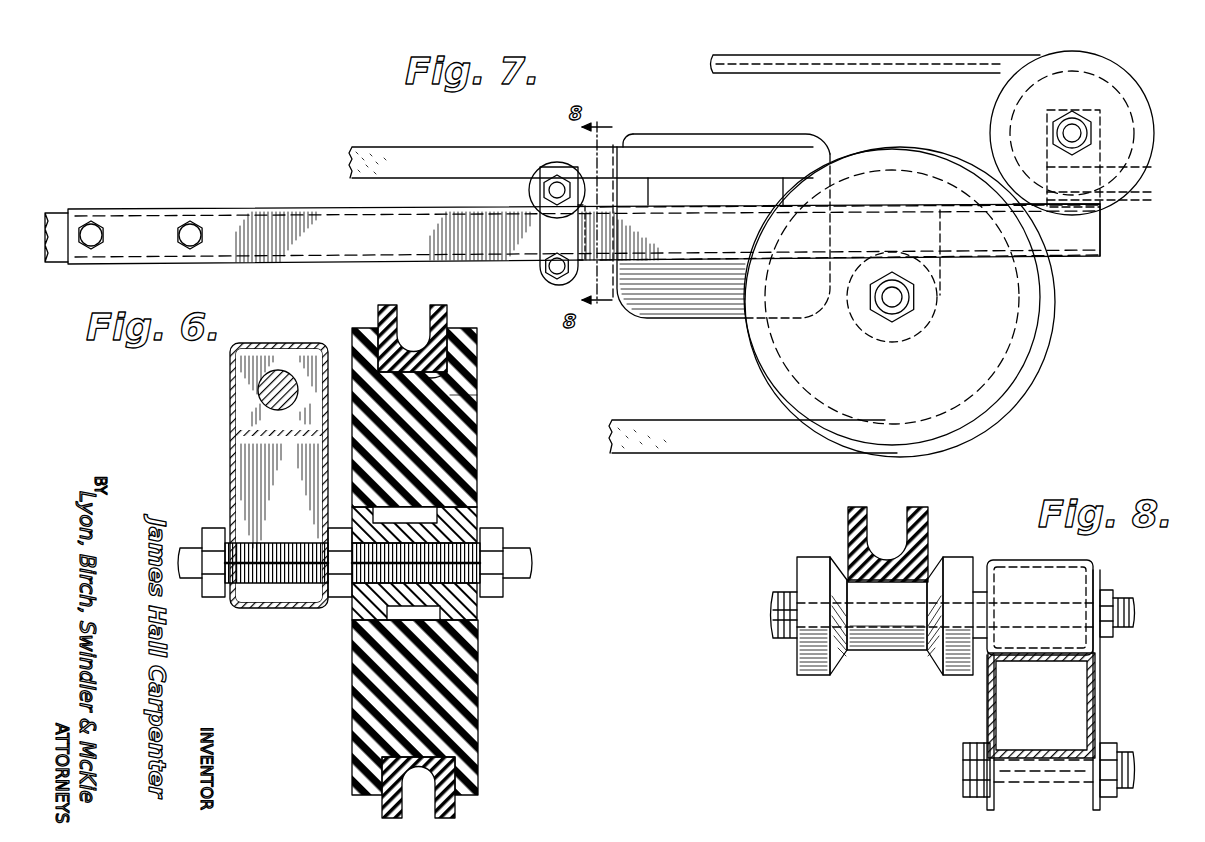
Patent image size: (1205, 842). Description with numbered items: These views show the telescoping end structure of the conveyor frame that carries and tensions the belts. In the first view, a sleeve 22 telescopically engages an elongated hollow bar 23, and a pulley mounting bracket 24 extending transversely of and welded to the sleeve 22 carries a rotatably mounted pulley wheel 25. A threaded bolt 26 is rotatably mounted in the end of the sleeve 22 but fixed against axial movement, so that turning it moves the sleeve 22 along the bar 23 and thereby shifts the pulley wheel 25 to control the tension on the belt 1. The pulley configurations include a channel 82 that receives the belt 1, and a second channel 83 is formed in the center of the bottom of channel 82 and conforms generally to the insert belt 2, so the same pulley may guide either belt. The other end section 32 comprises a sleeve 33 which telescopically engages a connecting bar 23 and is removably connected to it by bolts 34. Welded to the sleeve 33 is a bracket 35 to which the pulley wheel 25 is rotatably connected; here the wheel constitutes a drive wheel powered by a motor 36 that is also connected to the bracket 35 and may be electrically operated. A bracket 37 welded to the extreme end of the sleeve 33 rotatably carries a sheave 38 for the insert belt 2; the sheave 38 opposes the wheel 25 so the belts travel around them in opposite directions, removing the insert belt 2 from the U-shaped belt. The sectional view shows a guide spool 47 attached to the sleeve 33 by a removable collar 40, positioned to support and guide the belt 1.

In FIG. 7, the belt 1 is at (462, 150).
In FIG. 6, the belt 1 is at (445, 325).
In FIG. 8, the belt 1 is at (928, 530).
In FIG. 7, the insert belt 2 is at (815, 72).
In FIG. 6, the sleeve 22 is at (232, 395).
In FIG. 7, the elongated hollow bar 23 is at (55, 219).
In FIG. 6, the pulley mounting bracket 24 is at (240, 473).
In FIG. 7, the pulley wheel 25 is at (802, 366).
In FIG. 6, the pulley wheel 25 is at (470, 683).
In FIG. 6, the threaded bolt 26 is at (278, 380).
In FIG. 7, the other end section 32 is at (1104, 232).
In FIG. 7, the sleeve 33 is at (1078, 256).
In FIG. 8, the sleeve 33 is at (995, 712).
In FIG. 7, the bolts 34 is at (95, 224).
In FIG. 7, the bracket 35 is at (936, 292).
In FIG. 7, the motor 36 is at (634, 314).
In FIG. 7, the bracket 37 is at (1148, 164).
In FIG. 7, the sheave 38 is at (1117, 72).
In FIG. 7, the removable collar 40 is at (548, 244).
In FIG. 8, the removable collar 40 is at (1100, 676).
In FIG. 7, the guide spool 47 is at (530, 190).
In FIG. 8, the guide spool 47 is at (811, 562).
In FIG. 6, the channel 82 is at (463, 373).
In FIG. 6, the second channel 83 is at (451, 405).